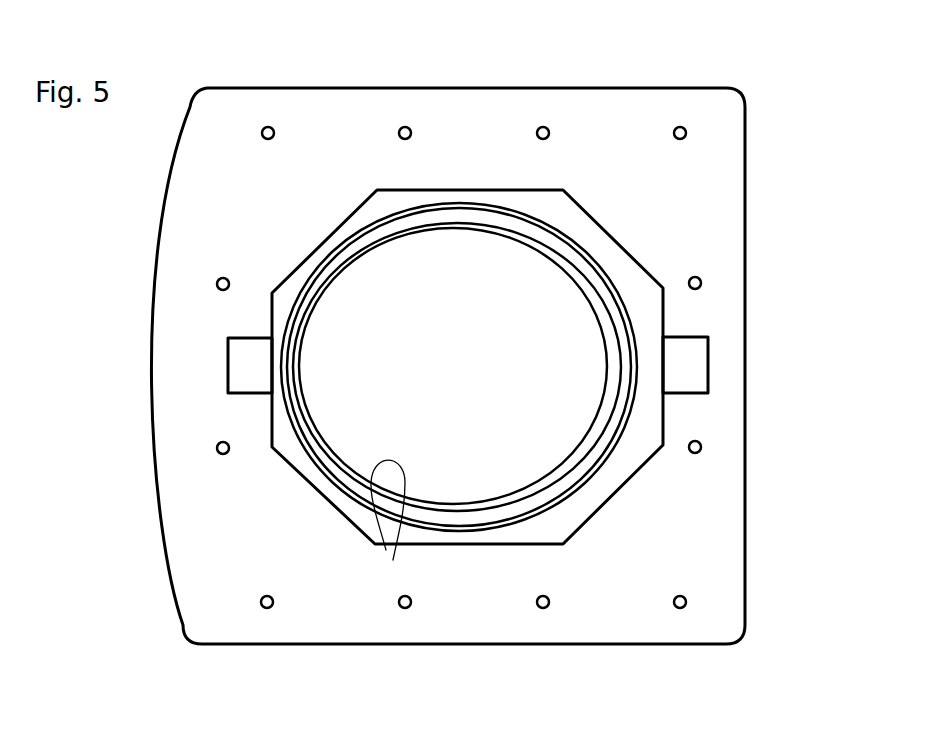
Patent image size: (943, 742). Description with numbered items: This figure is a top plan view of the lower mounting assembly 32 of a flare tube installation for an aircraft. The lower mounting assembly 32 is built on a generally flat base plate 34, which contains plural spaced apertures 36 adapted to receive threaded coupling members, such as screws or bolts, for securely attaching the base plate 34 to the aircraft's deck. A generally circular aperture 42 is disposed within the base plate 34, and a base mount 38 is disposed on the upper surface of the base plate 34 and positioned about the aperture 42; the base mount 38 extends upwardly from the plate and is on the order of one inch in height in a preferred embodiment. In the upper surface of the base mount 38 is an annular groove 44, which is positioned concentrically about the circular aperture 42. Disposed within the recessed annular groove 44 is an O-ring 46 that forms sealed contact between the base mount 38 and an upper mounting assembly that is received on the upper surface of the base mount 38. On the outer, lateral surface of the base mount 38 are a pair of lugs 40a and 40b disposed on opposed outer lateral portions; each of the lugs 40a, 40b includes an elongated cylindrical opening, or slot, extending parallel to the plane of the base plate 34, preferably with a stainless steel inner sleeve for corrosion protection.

The lower mounting assembly 32 is at (507, 366).
The base plate 34 is at (702, 532).
The apertures 36 is at (550, 607).
The base mount 38 is at (477, 545).
The first lug 40a is at (705, 366).
The second lug 40b is at (242, 365).
The circular aperture 42 is at (386, 550).
The annular groove 44 is at (290, 307).
The O-ring 46 is at (368, 223).